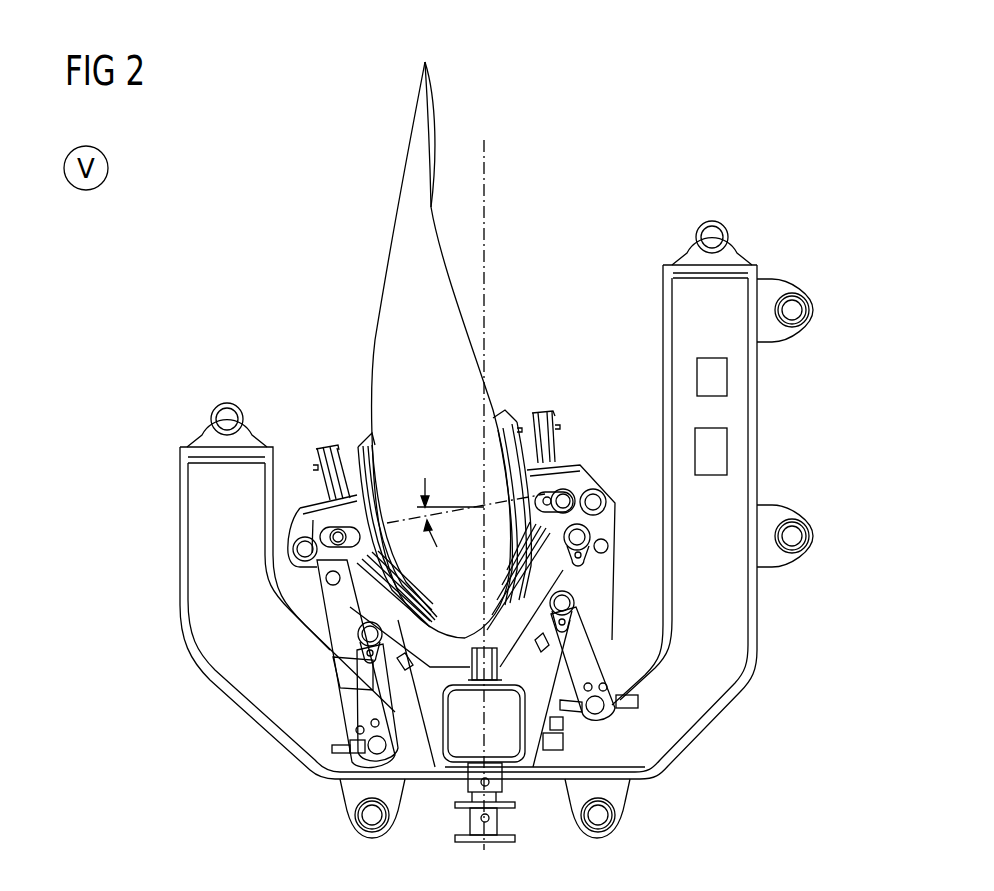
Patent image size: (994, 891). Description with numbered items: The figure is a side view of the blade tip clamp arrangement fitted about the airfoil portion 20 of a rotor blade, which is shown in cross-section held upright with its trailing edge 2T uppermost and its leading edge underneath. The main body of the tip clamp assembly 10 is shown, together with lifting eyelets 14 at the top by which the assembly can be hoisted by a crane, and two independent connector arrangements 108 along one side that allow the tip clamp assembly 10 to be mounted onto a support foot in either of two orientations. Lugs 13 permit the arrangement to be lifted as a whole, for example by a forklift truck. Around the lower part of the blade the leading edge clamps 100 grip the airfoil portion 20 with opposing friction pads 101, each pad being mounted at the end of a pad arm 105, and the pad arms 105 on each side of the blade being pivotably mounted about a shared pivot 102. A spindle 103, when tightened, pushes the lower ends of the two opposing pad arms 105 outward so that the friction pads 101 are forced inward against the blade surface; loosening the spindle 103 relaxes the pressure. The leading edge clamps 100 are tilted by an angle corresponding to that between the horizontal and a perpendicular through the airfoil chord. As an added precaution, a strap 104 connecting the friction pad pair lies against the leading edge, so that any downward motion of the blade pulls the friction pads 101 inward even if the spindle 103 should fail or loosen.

The tip clamp assembly 10 is at (136, 461).
The lifting eyelets 14 is at (226, 414).
The connector arrangements 108 is at (797, 312).
The airfoil portion 20 is at (387, 320).
The trailing edge 2T is at (430, 92).
The friction pads 101 is at (360, 440).
The leading edge clamps 100 is at (583, 478).
The pivot 102 is at (572, 606).
The pad arm 105 is at (330, 607).
The strap 104 is at (515, 608).
The spindle 103 is at (566, 728).
The lugs 13 is at (570, 740).